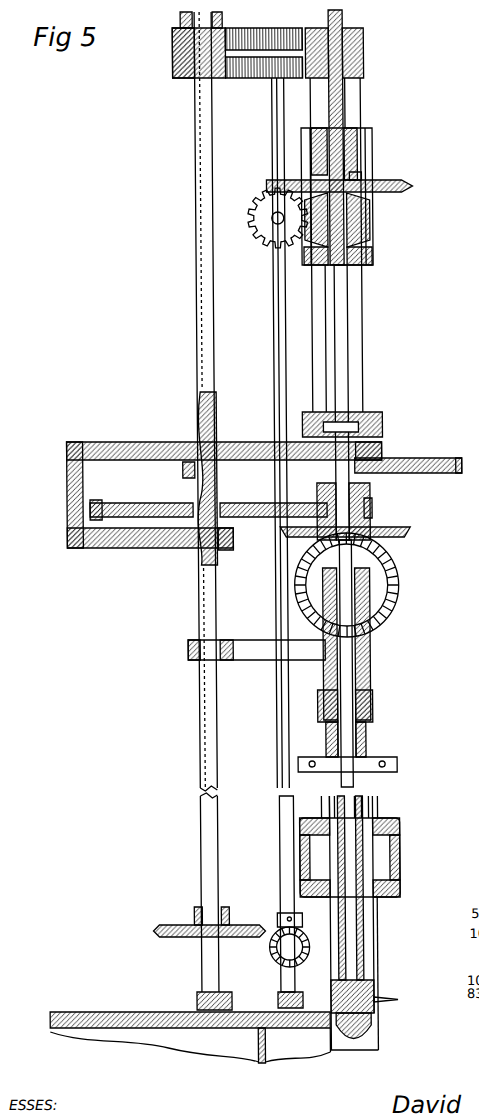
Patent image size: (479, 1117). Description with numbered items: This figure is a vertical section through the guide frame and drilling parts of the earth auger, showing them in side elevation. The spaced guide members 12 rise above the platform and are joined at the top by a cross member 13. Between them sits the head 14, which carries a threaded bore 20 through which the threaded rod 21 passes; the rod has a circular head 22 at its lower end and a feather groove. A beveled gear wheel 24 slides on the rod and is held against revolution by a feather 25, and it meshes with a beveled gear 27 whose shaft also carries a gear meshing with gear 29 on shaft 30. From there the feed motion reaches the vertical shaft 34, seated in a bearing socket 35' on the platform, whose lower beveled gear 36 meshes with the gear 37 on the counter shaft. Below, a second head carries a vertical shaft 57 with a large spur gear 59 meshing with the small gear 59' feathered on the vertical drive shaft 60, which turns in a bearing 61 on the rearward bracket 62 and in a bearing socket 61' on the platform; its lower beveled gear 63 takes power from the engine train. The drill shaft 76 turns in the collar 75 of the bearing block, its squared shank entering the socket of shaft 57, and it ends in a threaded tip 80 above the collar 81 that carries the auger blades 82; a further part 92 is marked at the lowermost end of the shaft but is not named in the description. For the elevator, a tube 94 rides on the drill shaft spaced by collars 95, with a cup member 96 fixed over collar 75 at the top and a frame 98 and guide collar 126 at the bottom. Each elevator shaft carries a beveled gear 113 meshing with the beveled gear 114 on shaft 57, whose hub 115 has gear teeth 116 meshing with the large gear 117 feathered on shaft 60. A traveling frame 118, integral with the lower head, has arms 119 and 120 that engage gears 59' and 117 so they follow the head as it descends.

The cross member 13 is at (368, 52).
The bearing 61 is at (156, 53).
The bracket 62 is at (259, 34).
The threaded rod 21 is at (345, 104).
The guide members 12 is at (362, 88).
The head 14 is at (358, 131).
The threaded bore 20 is at (350, 156).
The beveled gear wheel 24 is at (405, 188).
The feather 25 is at (372, 178).
The beveled gear 27 is at (371, 222).
The gear 29 is at (258, 232).
The shaft 30 is at (276, 224).
The vertical shaft 60 is at (194, 322).
The vertical shaft 34 is at (281, 325).
The circular head 22 is at (362, 414).
The arm 119 is at (167, 442).
The traveling frame 118 is at (63, 470).
The arm 120 is at (165, 548).
The large gear 117 is at (270, 510).
The small gear 59' is at (166, 474).
The spur-gear 59 is at (407, 450).
The vertical shaft 57 is at (387, 450).
The hub 115 is at (368, 505).
The gear teeth 116 is at (370, 510).
The beveled gear 114 is at (403, 532).
The beveled gear 113 is at (392, 582).
The collar 75 is at (368, 695).
The cup member 96 is at (368, 710).
The collars 95 is at (364, 734).
The tube 94 is at (364, 809).
The guide collar 126 is at (394, 873).
The drill shaft 76 is at (346, 934).
The frame 98 is at (371, 917).
The collar 81 is at (367, 986).
The threaded tip 80 is at (362, 1027).
The auger blades 82 is at (391, 1000).
The nozzle tip 92 is at (346, 1048).
The bearing socket 61' is at (184, 994).
The bearing socket 35' is at (291, 1025).
The beveled gear 63 is at (176, 925).
The beveled gear 36 is at (272, 926).
The beveled gear 37 is at (270, 950).